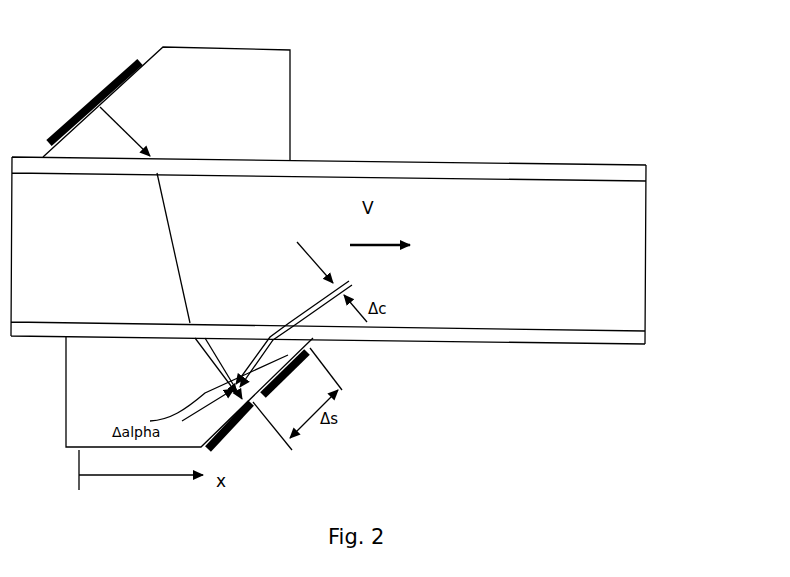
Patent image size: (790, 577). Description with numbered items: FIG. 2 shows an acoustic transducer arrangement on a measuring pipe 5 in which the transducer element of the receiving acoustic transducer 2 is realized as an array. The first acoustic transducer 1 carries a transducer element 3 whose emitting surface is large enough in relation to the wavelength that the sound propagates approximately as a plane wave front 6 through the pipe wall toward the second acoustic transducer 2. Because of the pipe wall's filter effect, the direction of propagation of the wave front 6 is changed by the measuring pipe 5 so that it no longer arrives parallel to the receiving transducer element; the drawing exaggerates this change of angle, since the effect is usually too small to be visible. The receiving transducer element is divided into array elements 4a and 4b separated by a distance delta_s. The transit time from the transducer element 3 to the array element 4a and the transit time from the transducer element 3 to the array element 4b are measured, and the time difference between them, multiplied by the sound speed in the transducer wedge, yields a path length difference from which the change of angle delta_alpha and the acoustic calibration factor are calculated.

The acoustic transducer 1 is at (166, 185).
The acoustic transducer 2 is at (189, 391).
The transducer element 3 is at (81, 102).
The array element 4a is at (302, 372).
The array element 4b is at (250, 426).
The measuring pipe 5 is at (328, 244).
The wave front 6 is at (291, 320).